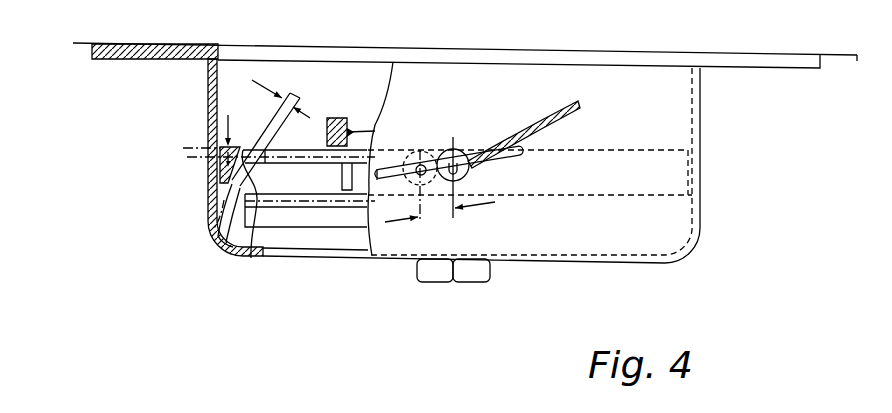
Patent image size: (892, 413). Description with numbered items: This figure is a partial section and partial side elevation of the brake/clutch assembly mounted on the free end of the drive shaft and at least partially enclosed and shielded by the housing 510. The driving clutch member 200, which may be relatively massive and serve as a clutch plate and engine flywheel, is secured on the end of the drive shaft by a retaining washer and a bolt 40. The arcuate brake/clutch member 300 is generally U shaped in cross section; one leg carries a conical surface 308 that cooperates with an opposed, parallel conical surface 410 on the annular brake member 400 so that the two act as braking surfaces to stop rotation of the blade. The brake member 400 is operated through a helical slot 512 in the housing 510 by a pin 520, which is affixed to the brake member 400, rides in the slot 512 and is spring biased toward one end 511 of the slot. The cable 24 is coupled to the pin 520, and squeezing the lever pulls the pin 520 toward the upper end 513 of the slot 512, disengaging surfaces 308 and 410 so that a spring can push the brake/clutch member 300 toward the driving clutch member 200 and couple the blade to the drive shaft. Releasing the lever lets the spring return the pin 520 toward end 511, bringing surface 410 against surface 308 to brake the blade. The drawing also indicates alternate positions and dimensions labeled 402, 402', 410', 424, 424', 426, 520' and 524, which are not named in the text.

The cable 24 is at (553, 102).
The bolt 40 is at (437, 273).
The driving clutch member 200 is at (326, 120).
The arcuate brake/clutch member 300 is at (318, 159).
The conical surface 308 is at (249, 155).
The annular brake member 400 is at (221, 176).
The bent portion of strip 402 is at (189, 213).
The bent portion alternate position 402' is at (187, 222).
The conical surface 410 is at (210, 259).
The free end alternate position 410' is at (257, 222).
The rod axis 424 is at (174, 130).
The rod axis shifted position 424' is at (241, 151).
The strip thickness 426 is at (293, 97).
The housing 510 is at (211, 80).
The end of slot 511 is at (378, 171).
The helical slot 512 is at (489, 170).
The upper end of slot 513 is at (527, 147).
The pin 520 is at (469, 157).
The roller alternate position 520' is at (435, 147).
The travel distance 524 is at (446, 208).